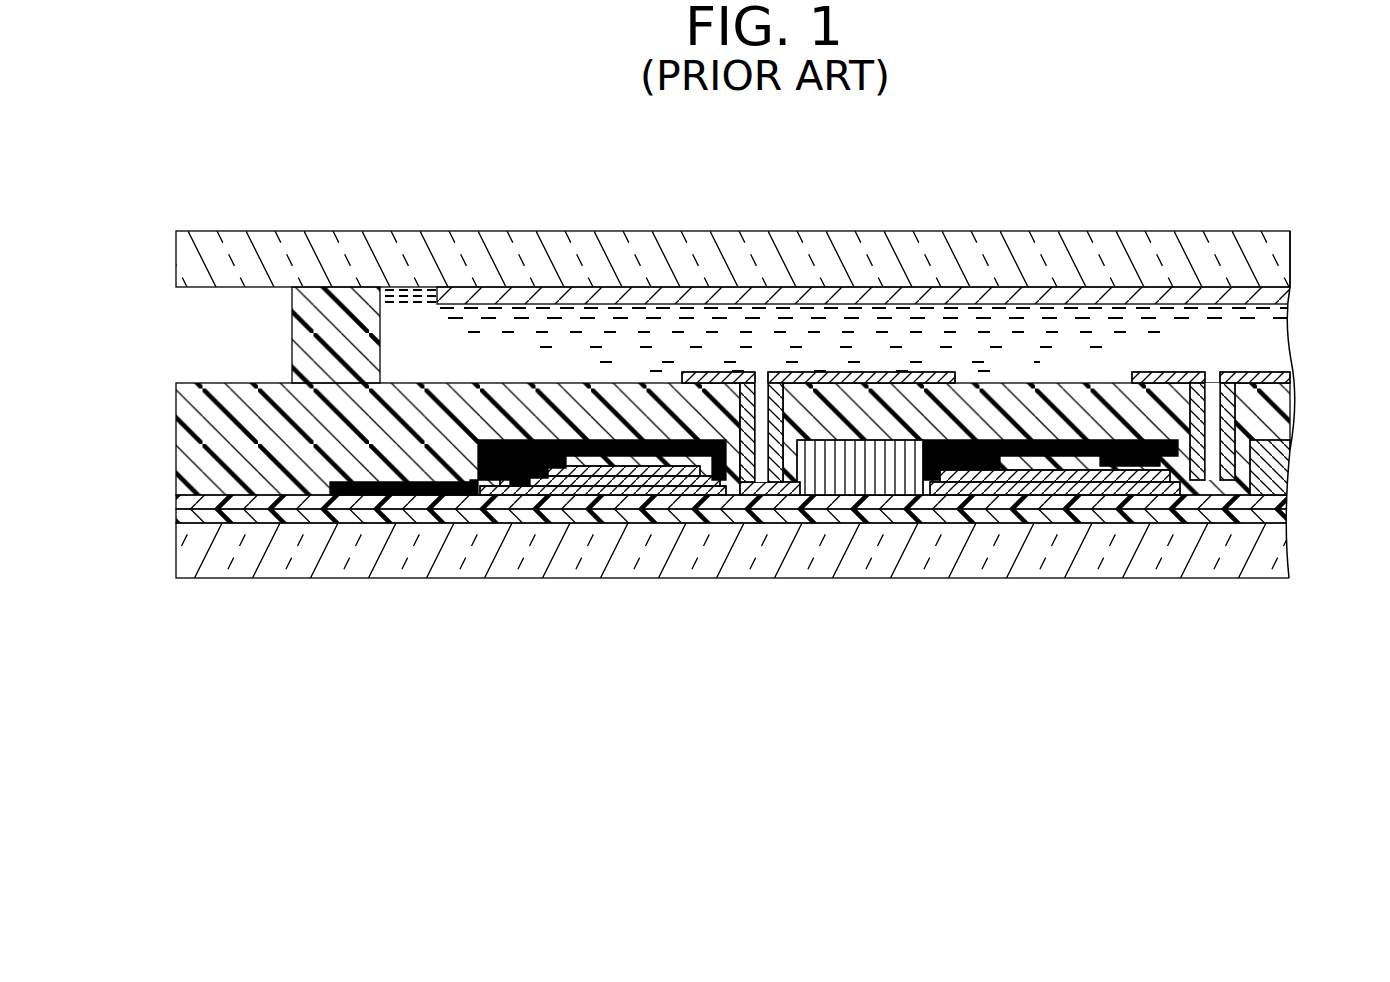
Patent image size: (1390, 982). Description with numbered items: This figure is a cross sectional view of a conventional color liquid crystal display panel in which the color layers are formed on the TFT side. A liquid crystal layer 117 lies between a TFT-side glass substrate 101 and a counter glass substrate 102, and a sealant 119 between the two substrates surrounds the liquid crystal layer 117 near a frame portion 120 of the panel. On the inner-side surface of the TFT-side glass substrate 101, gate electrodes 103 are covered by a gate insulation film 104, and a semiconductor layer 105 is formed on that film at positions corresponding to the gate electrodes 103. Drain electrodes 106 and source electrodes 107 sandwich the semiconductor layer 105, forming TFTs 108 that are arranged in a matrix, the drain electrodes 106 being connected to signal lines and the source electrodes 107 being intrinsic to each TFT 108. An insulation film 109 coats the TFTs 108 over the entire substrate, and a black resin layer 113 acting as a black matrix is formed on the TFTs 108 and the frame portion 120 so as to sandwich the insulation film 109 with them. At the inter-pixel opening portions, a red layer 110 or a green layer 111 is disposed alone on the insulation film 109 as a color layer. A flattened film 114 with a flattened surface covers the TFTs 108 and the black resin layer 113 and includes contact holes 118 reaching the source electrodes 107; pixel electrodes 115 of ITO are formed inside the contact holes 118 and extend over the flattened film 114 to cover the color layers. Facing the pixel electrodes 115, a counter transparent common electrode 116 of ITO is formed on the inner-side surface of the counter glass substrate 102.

The TFT-side glass substrate 101 is at (985, 563).
The counter glass substrate 102 is at (920, 262).
The gate electrode 103 is at (630, 513).
The gate insulation film 104 is at (403, 517).
The semiconductor layer 105 is at (674, 483).
The drain electrode 106 is at (528, 517).
The source electrode 107 is at (790, 500).
The TFT 108 is at (660, 672).
The insulation film 109 is at (300, 502).
The red layer 110 is at (885, 487).
The green layer 111 is at (1280, 463).
The black resin layer 113 is at (555, 435).
The flattened film 114 is at (212, 482).
The pixel electrode 115 is at (1253, 380).
The counter transparent common electrode 116 is at (1075, 295).
The liquid crystal layer 117 is at (735, 330).
The contact hole 118 is at (1227, 440).
The sealant 119 is at (348, 300).
The frame portion 120 is at (410, 325).